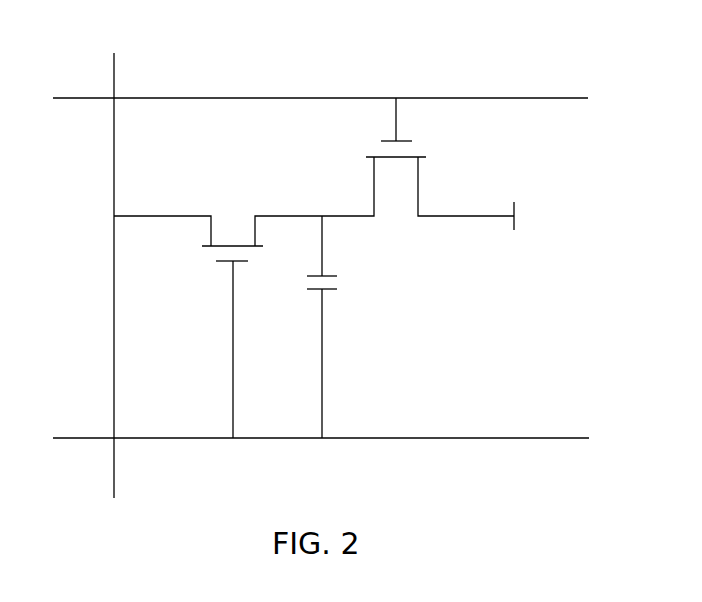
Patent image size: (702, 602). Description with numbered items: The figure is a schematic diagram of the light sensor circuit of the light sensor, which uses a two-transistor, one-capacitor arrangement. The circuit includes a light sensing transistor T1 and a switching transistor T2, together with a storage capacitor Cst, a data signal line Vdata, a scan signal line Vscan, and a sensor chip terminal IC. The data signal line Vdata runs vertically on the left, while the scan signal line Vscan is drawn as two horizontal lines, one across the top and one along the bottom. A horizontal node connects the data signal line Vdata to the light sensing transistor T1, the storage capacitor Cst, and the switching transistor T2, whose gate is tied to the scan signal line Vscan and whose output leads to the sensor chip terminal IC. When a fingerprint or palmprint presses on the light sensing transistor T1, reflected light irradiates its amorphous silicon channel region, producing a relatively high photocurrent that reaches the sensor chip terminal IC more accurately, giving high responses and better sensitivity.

The light sensing transistor T1 is at (224, 342).
The switching transistor T2 is at (410, 132).
The storage capacitor Cst is at (334, 327).
The sensor chip terminal IC is at (530, 216).
The data signal line Vdata is at (92, 263).
The scan signal line Vscan is at (316, 252).